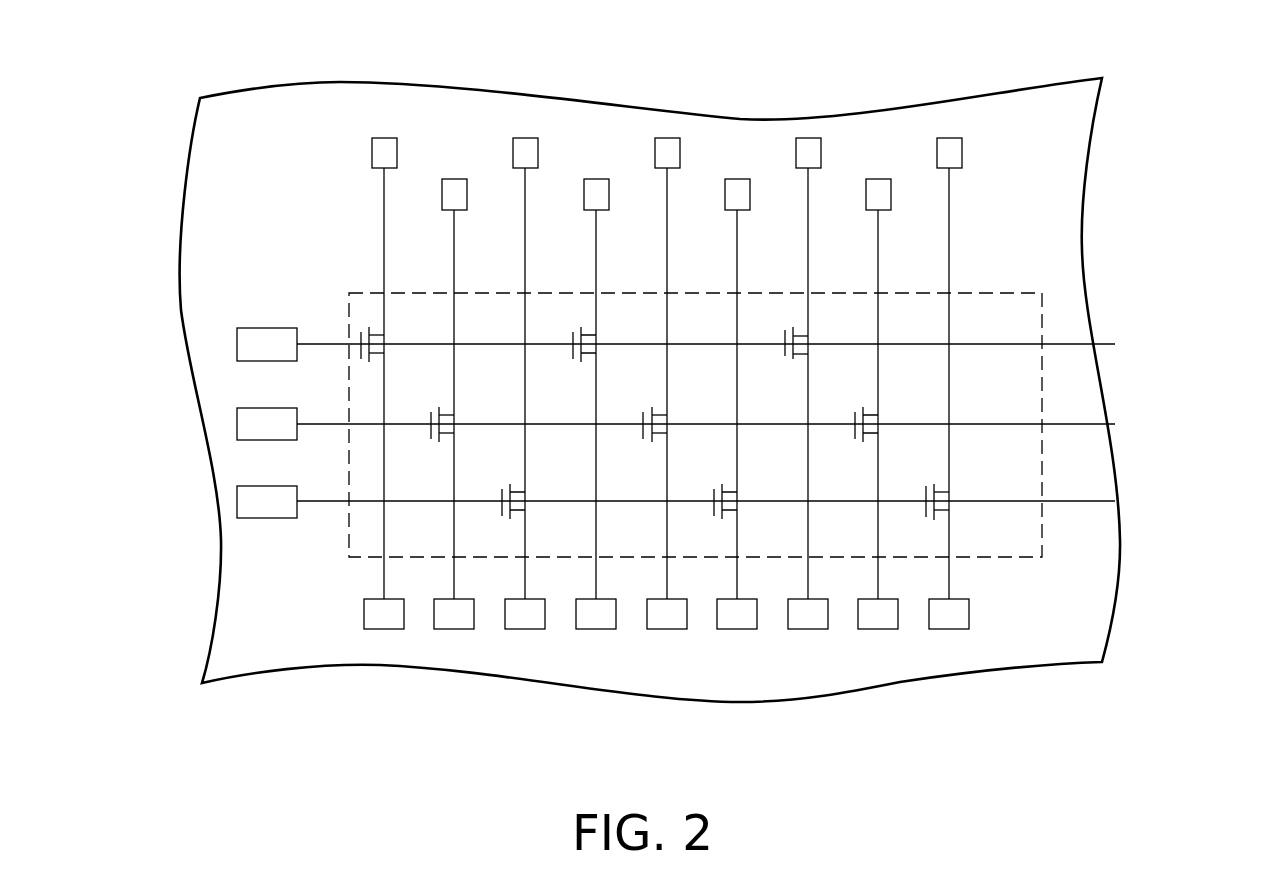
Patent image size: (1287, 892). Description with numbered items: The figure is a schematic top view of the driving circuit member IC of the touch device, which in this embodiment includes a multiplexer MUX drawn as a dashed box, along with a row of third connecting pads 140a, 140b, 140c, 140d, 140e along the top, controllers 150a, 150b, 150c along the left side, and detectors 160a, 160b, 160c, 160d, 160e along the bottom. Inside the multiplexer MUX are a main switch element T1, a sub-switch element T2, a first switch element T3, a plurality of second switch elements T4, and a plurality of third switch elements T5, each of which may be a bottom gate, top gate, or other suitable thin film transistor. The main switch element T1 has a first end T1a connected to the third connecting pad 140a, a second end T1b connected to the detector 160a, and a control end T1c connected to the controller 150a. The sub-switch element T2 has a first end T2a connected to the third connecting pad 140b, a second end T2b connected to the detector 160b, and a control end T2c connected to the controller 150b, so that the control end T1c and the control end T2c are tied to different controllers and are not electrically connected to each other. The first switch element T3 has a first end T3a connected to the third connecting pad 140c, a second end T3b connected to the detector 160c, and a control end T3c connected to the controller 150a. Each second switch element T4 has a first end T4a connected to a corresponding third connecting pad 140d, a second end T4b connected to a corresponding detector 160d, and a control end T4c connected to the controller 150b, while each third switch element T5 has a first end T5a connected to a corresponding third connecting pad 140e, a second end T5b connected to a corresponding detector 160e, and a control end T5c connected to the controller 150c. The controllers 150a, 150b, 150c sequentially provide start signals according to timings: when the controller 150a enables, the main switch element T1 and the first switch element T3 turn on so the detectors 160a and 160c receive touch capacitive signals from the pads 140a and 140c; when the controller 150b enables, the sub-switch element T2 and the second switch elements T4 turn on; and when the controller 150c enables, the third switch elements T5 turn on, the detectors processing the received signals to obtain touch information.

The third connecting pad 140a is at (385, 138).
The third connecting pad 140b is at (667, 138).
The third connecting pad 140c is at (808, 138).
The third connecting pad 140d is at (454, 179).
The third connecting pad 140e is at (525, 138).
The controller 150a is at (237, 338).
The controller 150b is at (237, 422).
The controller 150c is at (237, 500).
The detector 160a is at (382, 629).
The detector 160b is at (665, 629).
The detector 160c is at (808, 629).
The detector 160d is at (455, 629).
The detector 160e is at (523, 629).
The main switch element T1 is at (337, 277).
The first end of main switch element T1a is at (371, 333).
The second end of main switch element T1b is at (371, 353).
The control end of main switch element T1c is at (361, 333).
The sub-switch element T2 is at (669, 422).
The first end of sub-switch element T2a is at (653, 414).
The second end of sub-switch element T2b is at (653, 433).
The control end of sub-switch element T2c is at (643, 414).
The first switch element T3 is at (796, 320).
The first end of first switch element T3a is at (800, 333).
The second end of first switch element T3b is at (801, 355).
The control end of first switch element T3c is at (784, 333).
The second switch element T4 is at (656, 420).
The first end of second switch element T4a is at (447, 412).
The second end of second switch element T4b is at (447, 433).
The control end of second switch element T4c is at (430, 413).
The third switch element T5 is at (759, 489).
The first end of third switch element T5a is at (940, 491).
The second end of third switch element T5b is at (940, 520).
The control end of third switch element T5c is at (925, 494).
The multiplexer MUX is at (993, 292).
The driving circuit member IC is at (1286, 763).